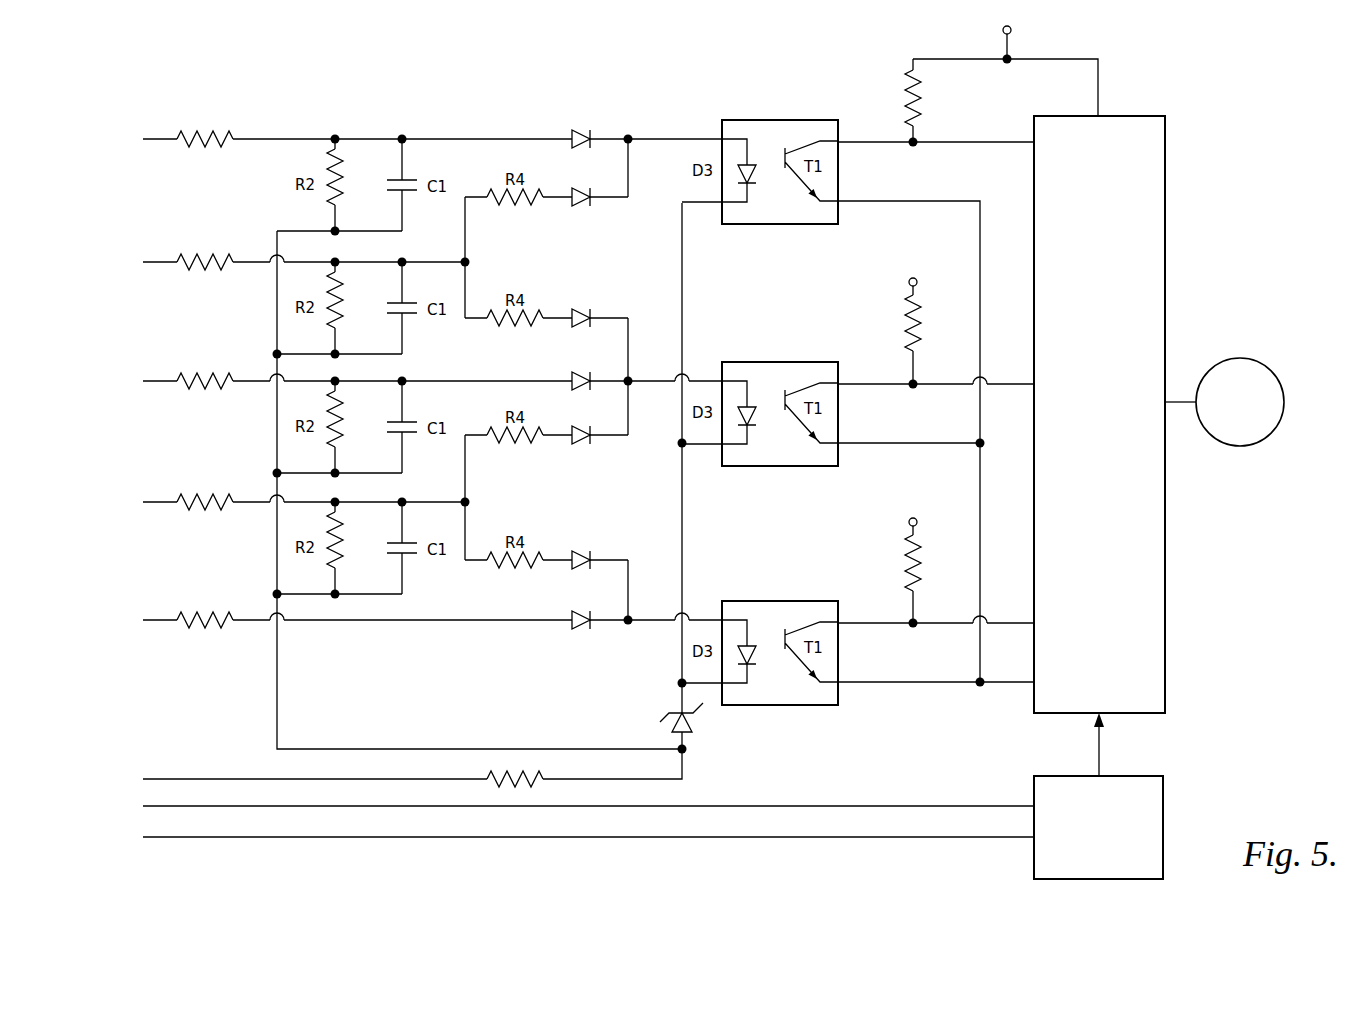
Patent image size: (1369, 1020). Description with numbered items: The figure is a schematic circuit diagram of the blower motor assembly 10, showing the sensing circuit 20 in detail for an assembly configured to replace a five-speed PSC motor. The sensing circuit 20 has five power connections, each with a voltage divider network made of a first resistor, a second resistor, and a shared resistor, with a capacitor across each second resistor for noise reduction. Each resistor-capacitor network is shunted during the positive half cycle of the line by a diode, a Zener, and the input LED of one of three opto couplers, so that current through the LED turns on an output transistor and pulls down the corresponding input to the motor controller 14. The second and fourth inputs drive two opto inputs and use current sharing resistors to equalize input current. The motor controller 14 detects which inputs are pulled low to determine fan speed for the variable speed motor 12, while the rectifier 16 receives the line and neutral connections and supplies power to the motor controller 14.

The blower motor assembly 10 is at (1187, 91).
The variable speed motor 12 is at (1240, 360).
The motor controller and power converter 14 is at (1147, 632).
The rectifier 16 is at (1153, 791).
The sensing circuit 20 is at (490, 101).